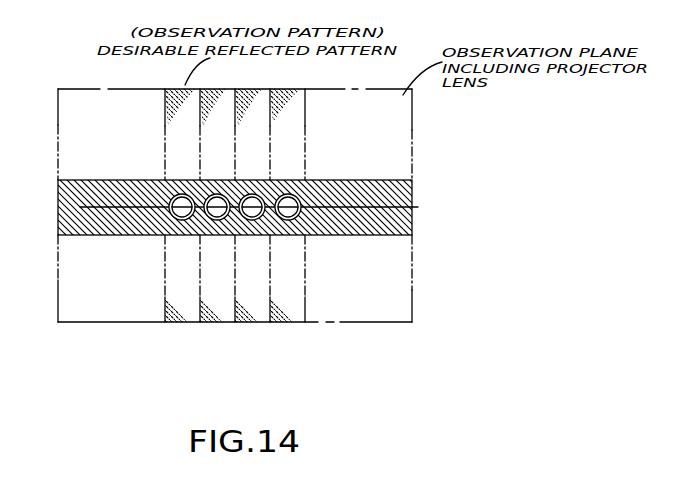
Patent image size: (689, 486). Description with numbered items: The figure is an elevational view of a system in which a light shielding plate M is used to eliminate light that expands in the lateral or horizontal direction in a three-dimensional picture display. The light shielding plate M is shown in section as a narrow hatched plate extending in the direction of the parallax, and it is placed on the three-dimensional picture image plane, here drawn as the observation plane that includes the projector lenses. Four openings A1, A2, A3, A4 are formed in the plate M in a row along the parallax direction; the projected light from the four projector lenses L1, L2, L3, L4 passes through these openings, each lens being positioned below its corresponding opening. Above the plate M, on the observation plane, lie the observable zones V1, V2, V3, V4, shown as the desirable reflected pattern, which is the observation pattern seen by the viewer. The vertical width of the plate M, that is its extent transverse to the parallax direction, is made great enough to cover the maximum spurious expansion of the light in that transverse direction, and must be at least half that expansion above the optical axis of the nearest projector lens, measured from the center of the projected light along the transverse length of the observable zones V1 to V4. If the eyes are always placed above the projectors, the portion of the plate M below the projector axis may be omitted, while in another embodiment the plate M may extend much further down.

The light shielding plate M is at (72, 198).
The opening A1 is at (171, 234).
The opening A2 is at (218, 180).
The opening A3 is at (252, 180).
The opening A4 is at (288, 180).
The observable zone V1 is at (175, 122).
The observable zone V2 is at (216, 94).
The observable zone V3 is at (250, 94).
The observable zone V4 is at (289, 94).
The lens L1 is at (178, 238).
The lens L2 is at (215, 238).
The lens L3 is at (250, 238).
The lens L4 is at (287, 238).